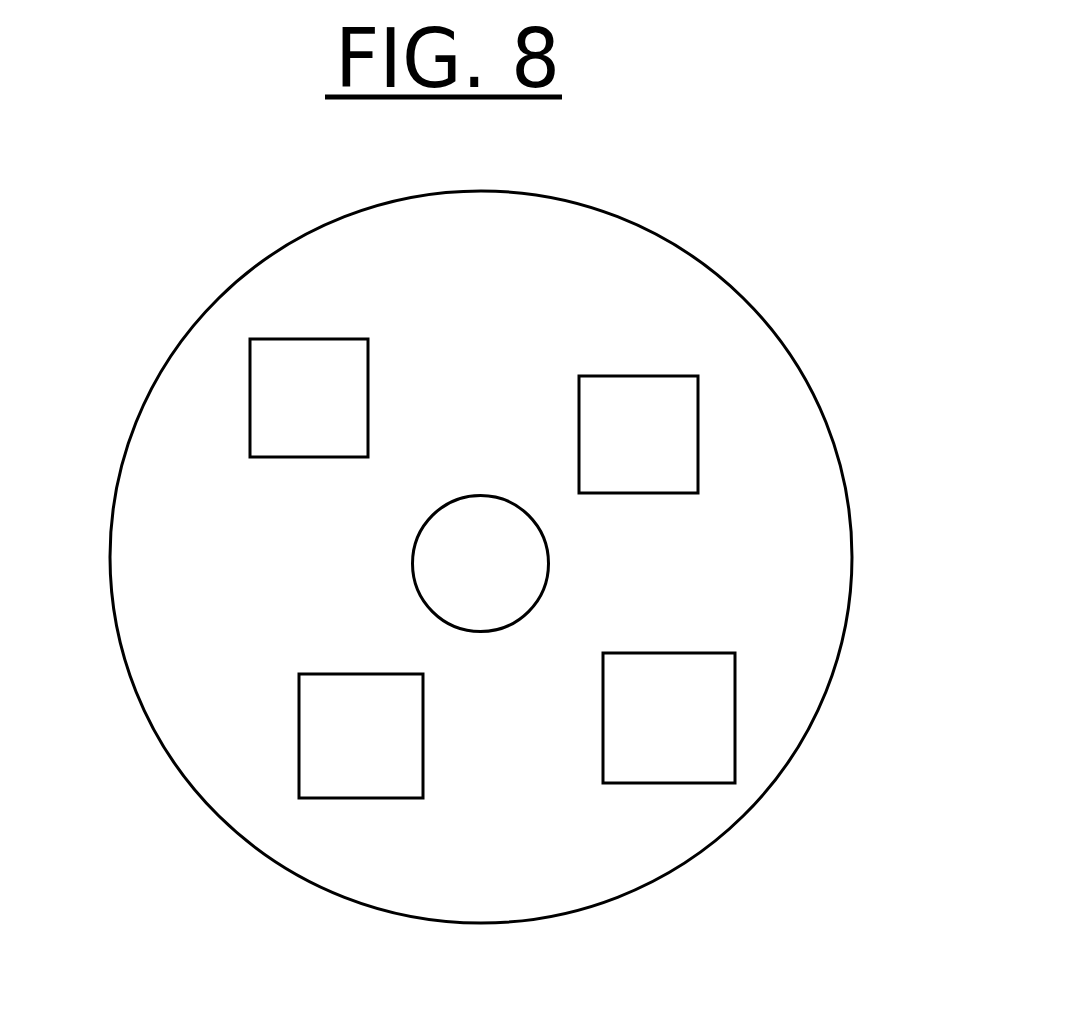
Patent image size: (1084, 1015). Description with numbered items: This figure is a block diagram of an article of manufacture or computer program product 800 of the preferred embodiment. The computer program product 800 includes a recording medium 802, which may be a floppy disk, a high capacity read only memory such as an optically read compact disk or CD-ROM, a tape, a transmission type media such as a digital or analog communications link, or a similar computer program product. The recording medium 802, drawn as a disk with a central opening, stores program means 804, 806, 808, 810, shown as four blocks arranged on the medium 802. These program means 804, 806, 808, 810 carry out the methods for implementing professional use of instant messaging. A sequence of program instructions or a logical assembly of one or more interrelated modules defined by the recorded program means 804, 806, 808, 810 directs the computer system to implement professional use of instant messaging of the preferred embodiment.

The computer program product 800 is at (808, 316).
The recording medium 802 is at (174, 337).
The program means 804 is at (361, 736).
The program means 806 is at (669, 718).
The program means 808 is at (638, 434).
The program means 810 is at (309, 398).